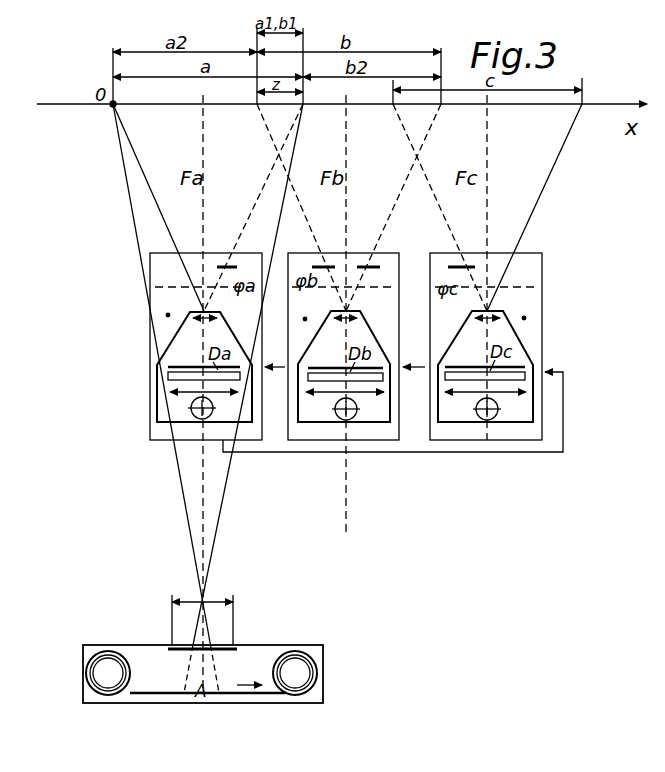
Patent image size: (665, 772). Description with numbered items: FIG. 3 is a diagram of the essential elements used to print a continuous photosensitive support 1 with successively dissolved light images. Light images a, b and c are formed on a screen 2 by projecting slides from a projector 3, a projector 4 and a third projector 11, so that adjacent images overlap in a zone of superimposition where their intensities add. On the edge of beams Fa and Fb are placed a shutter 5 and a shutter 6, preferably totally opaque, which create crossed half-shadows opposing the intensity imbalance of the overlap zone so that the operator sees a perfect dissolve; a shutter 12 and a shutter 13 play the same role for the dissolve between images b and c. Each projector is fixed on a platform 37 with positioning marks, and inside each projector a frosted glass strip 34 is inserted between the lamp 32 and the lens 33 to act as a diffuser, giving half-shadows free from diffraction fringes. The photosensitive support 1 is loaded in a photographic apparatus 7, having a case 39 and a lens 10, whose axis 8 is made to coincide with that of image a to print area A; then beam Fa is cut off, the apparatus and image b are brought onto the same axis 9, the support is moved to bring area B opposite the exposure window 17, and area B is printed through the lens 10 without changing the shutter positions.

The continuous photosensitive support 1 is at (142, 703).
The screen 2 is at (60, 106).
The projector 3 is at (172, 342).
The projector 4 is at (318, 334).
The shutter 5 is at (223, 265).
The shutter 6 is at (330, 265).
The photographic apparatus 7 is at (326, 672).
The axis 8 is at (203, 530).
The axis 9 is at (346, 500).
The lens 10 is at (215, 599).
The third projector 11 is at (515, 340).
The shutter 12 is at (367, 265).
The shutter 13 is at (456, 265).
The exposure window 17 is at (187, 690).
The lamp 32 is at (195, 414).
The lens 33 is at (192, 315).
The frosted glass strip 34 is at (170, 376).
The platform 37 is at (350, 305).
The case 39 is at (83, 656).